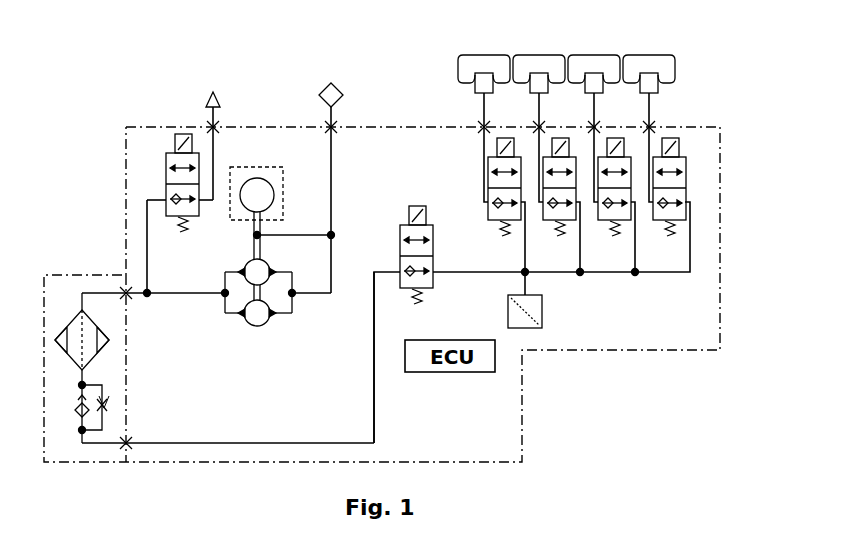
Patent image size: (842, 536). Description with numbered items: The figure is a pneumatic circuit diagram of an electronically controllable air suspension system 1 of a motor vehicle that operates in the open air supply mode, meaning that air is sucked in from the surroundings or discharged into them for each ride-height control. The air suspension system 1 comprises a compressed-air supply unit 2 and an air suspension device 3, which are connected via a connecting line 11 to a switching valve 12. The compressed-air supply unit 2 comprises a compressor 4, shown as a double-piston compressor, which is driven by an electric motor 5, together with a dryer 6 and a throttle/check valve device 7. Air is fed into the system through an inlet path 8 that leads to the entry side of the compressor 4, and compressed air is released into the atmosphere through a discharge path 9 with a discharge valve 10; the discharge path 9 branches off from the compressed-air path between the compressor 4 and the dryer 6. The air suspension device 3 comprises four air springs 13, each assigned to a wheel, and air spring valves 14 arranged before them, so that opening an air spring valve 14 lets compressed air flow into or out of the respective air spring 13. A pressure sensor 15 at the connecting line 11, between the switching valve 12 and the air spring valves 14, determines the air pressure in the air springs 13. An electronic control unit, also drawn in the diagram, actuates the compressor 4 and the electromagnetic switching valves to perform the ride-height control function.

The air suspension system 1 is at (398, 125).
The compressed-air supply unit 2 is at (68, 200).
The air suspension device 3 is at (722, 88).
The compressor 4 is at (230, 326).
The electric motor 5 is at (284, 195).
The dryer 6 is at (78, 320).
The throttle/check valve device 7 is at (78, 404).
The inlet path 8 is at (333, 148).
The discharge path 9 is at (215, 148).
The discharge valve 10 is at (175, 160).
The connecting line 11 is at (376, 400).
The switching valve 12 is at (434, 263).
The air springs 13 is at (642, 65).
The air spring valves 14 is at (686, 197).
The pressure sensor 15 is at (542, 307).